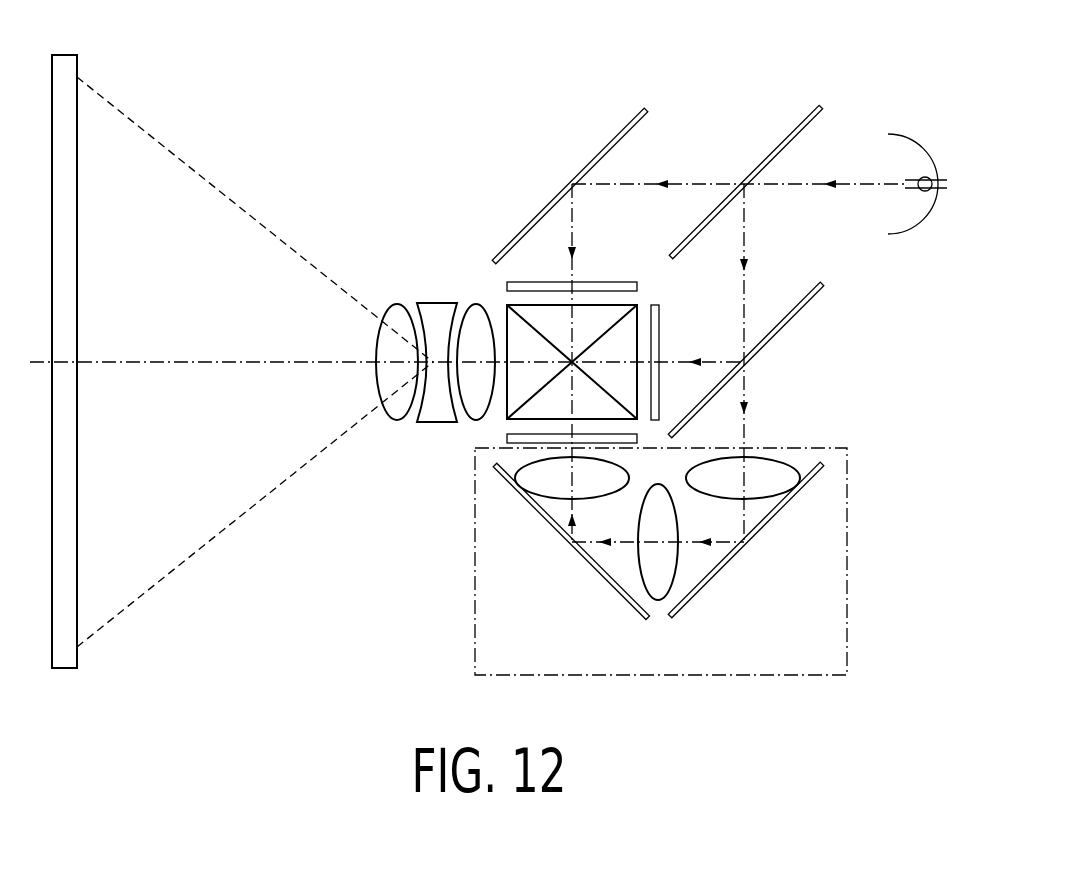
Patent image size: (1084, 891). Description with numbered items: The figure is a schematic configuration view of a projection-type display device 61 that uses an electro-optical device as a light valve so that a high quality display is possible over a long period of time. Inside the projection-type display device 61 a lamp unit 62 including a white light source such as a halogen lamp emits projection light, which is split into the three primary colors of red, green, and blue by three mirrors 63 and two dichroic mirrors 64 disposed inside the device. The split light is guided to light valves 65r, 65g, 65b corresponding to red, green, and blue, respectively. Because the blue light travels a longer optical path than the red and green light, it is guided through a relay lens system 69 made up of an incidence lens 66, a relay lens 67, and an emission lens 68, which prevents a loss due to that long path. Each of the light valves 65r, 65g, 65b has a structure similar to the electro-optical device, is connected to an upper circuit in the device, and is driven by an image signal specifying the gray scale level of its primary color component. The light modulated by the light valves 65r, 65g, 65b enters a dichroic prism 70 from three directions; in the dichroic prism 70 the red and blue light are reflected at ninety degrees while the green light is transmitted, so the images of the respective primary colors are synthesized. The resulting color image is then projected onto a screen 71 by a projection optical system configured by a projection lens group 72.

The projection-type display device 61 is at (674, 73).
The lamp unit 62 is at (921, 177).
The mirror 63 is at (627, 120).
The dichroic mirror 64 is at (797, 122).
The light valve 65r is at (608, 280).
The light valve 65g is at (660, 308).
The light valve 65b is at (507, 436).
The incidence lens 66 is at (777, 483).
The relay lens 67 is at (663, 577).
The emission lens 68 is at (543, 483).
The relay lens system 69 is at (848, 518).
The dichroic prism 70 is at (638, 318).
The screen 71 is at (77, 655).
The projection lens group 72 is at (377, 297).